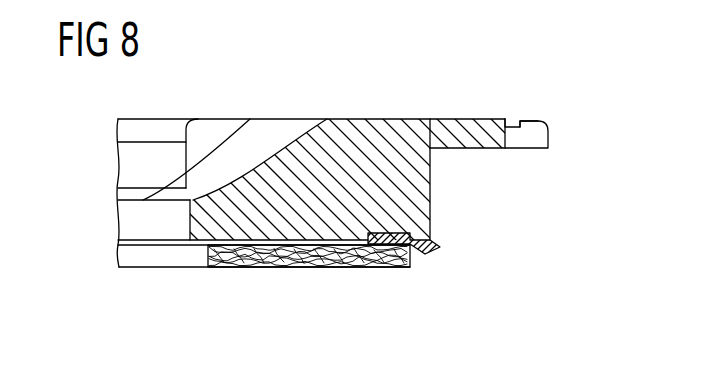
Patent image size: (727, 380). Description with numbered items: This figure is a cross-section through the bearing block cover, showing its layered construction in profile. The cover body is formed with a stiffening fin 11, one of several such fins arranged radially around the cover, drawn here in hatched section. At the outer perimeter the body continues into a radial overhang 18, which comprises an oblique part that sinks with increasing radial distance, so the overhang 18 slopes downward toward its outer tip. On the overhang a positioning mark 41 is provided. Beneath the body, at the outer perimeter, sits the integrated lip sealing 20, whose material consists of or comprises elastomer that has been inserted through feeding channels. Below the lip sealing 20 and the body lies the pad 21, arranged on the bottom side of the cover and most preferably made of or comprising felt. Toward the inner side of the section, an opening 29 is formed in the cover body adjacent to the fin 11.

The stiffening fin 11 is at (275, 130).
The overhang 18 is at (462, 128).
The lip sealing 20 is at (438, 244).
The pad 21 is at (340, 268).
The opening 29 is at (213, 130).
The positioning mark 41 is at (520, 122).